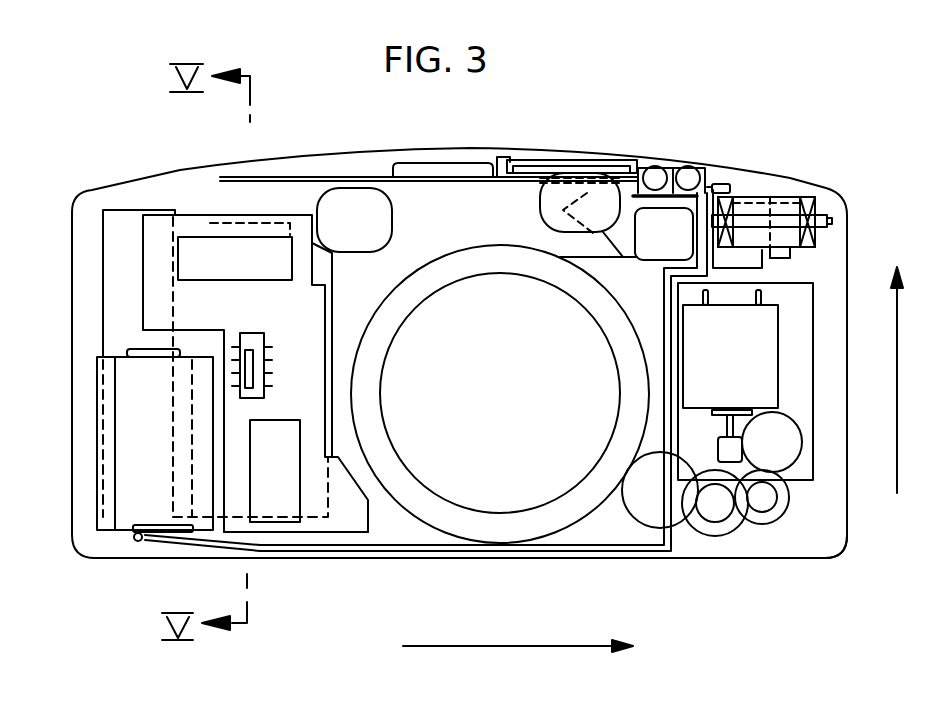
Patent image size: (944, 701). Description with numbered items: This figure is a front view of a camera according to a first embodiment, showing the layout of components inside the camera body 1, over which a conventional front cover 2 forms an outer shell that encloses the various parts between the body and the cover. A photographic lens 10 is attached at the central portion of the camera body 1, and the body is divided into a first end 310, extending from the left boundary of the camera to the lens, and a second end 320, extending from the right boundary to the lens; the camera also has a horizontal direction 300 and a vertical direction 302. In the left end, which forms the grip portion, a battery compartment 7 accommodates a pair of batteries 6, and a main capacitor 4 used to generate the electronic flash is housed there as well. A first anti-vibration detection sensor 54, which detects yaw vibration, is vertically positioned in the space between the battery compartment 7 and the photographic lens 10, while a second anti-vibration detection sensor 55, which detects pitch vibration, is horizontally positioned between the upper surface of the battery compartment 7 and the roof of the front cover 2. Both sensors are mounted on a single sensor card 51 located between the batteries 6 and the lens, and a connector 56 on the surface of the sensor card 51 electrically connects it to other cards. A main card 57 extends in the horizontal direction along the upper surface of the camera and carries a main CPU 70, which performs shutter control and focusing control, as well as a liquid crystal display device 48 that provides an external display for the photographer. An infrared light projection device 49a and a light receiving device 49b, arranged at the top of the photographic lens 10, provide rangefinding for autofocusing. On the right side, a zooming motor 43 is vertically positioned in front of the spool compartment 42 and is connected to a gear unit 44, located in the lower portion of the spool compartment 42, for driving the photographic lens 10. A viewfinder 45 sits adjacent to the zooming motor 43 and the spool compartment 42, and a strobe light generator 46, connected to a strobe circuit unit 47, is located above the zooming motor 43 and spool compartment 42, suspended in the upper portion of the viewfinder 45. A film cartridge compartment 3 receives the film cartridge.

The camera body 1 is at (64, 281).
The front cover 2 is at (852, 225).
The film cartridge compartment 3 is at (303, 252).
The main capacitor 4 is at (123, 235).
The batteries 6 is at (97, 408).
The battery compartment 7 is at (218, 508).
The photographic lens 10 is at (497, 502).
The spool compartment 42 is at (800, 475).
The zooming motor 43 is at (742, 367).
The gear unit 44 is at (767, 510).
The viewfinder 45 is at (632, 197).
The strobe light generator 46 is at (750, 204).
The strobe circuit unit 47 is at (687, 193).
The liquid crystal display device 48 is at (598, 167).
The infrared light projection device 49a is at (556, 200).
The light receiving device 49b is at (350, 207).
The sensor card 51 is at (190, 220).
The first anti-vibration detection sensor 54 is at (287, 512).
The second anti-vibration detection sensor 55 is at (252, 269).
The connector 56 is at (256, 334).
The main card 57 is at (220, 177).
The main CPU 70 is at (442, 168).
The horizontal direction 300 is at (544, 651).
The vertical direction 302 is at (897, 300).
The first end 310 is at (72, 364).
The second end 320 is at (845, 512).